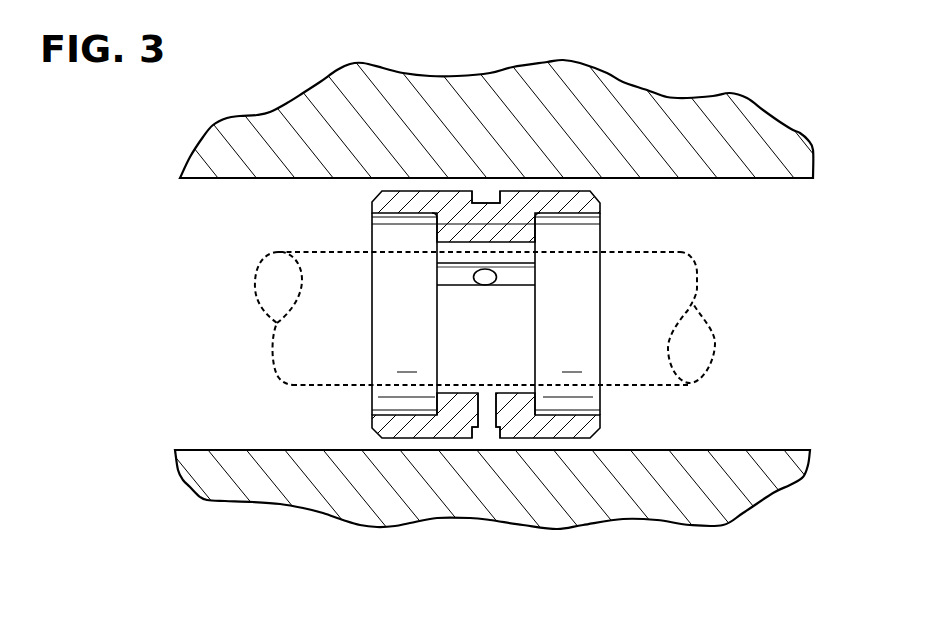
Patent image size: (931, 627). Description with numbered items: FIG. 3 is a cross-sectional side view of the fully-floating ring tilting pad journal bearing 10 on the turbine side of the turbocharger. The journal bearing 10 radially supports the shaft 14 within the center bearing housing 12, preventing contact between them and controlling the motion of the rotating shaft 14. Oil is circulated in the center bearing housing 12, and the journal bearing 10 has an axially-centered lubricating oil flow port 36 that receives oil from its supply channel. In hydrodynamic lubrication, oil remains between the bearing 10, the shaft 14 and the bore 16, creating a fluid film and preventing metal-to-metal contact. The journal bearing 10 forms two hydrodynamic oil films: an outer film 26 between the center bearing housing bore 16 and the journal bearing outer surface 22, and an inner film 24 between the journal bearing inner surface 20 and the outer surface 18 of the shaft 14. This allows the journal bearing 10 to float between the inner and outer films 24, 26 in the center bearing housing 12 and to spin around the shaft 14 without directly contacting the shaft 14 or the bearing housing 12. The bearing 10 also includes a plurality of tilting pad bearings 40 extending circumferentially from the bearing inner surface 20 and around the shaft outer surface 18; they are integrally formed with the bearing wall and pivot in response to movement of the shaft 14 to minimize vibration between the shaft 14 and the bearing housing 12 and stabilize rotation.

The journal bearing 10 is at (466, 304).
The center bearing housing 12 is at (669, 105).
The shaft 14 is at (511, 347).
The bore 16 is at (498, 447).
The outer surface of the shaft 18 is at (662, 385).
The journal bearing inner surface 20 is at (544, 242).
The journal bearing outer surface 22 is at (548, 450).
The inner film 24 is at (473, 257).
The outer film 26 is at (466, 374).
The lubricating oil flow port 36 is at (490, 203).
The tilting pad bearings 40 is at (435, 400).